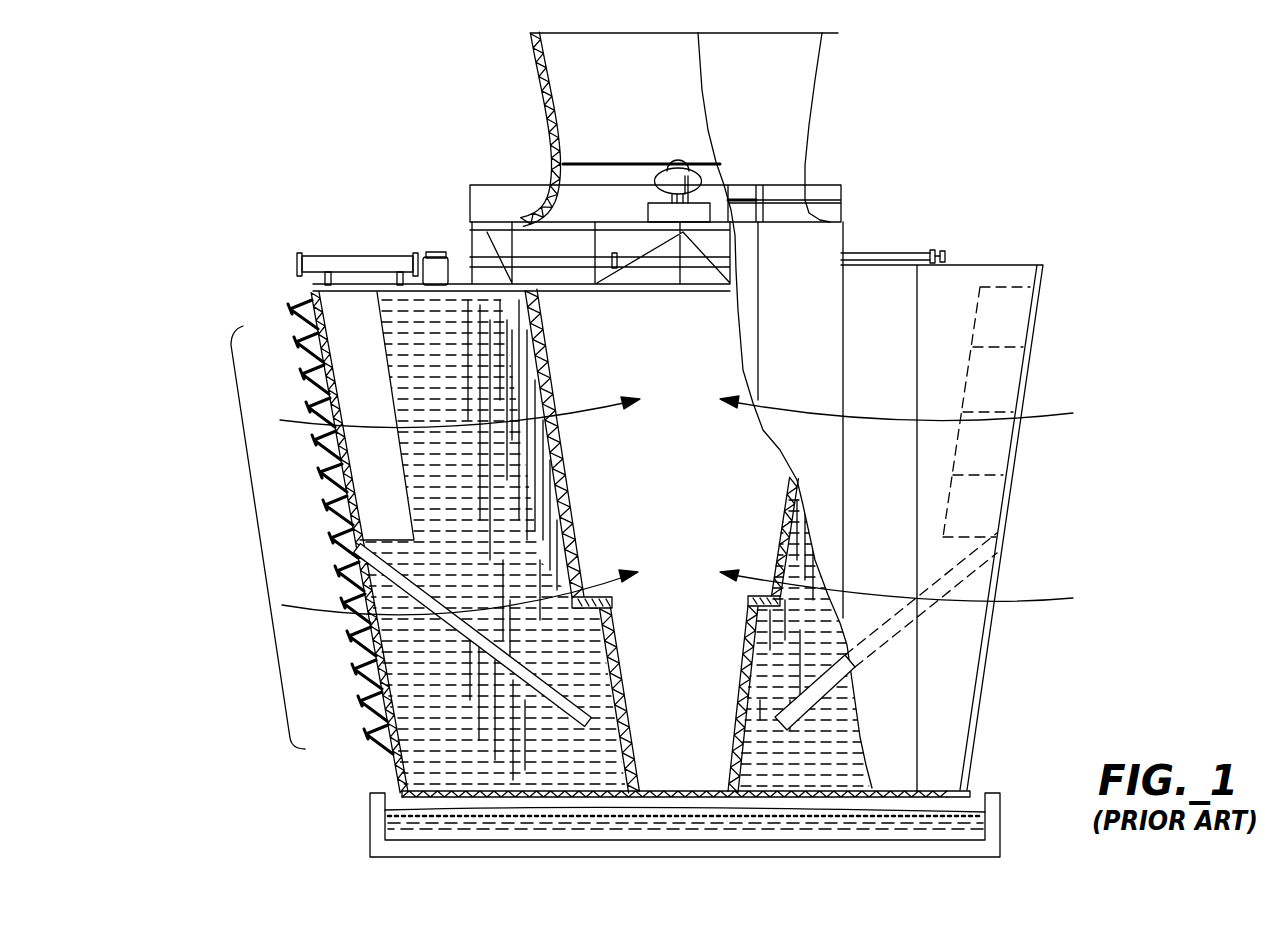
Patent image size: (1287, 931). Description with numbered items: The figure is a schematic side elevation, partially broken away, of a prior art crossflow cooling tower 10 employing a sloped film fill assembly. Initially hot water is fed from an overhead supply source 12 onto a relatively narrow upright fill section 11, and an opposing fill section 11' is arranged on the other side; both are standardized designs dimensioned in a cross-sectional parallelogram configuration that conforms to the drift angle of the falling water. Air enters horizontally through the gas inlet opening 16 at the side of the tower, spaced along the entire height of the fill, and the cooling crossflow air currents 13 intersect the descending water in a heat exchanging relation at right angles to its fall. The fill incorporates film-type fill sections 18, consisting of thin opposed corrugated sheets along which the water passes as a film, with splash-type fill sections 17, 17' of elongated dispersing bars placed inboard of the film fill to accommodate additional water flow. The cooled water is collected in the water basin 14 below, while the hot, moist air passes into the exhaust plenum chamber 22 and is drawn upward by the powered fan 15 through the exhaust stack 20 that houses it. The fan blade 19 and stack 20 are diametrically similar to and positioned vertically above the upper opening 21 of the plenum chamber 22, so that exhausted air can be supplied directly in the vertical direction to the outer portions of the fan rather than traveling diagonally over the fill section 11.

The crossflow cooling tower 10 is at (922, 118).
The upright fill section 11 is at (320, 400).
The fill section 11' is at (828, 631).
The overhead supply source 12 is at (375, 254).
The cooling crossflow air currents 13 is at (580, 406).
The water basin 14 is at (368, 830).
The powered fan 15 is at (680, 161).
The gas inlet opening 16 is at (248, 537).
The splash-type fill section 17 is at (505, 596).
The splash-type fill section 17' is at (812, 690).
The film-type fill section 18 is at (357, 384).
The fan blade 19 is at (593, 161).
The exhaust stack 20 is at (548, 93).
The upper opening 21 is at (585, 300).
The exhaust plenum chamber 22 is at (705, 536).